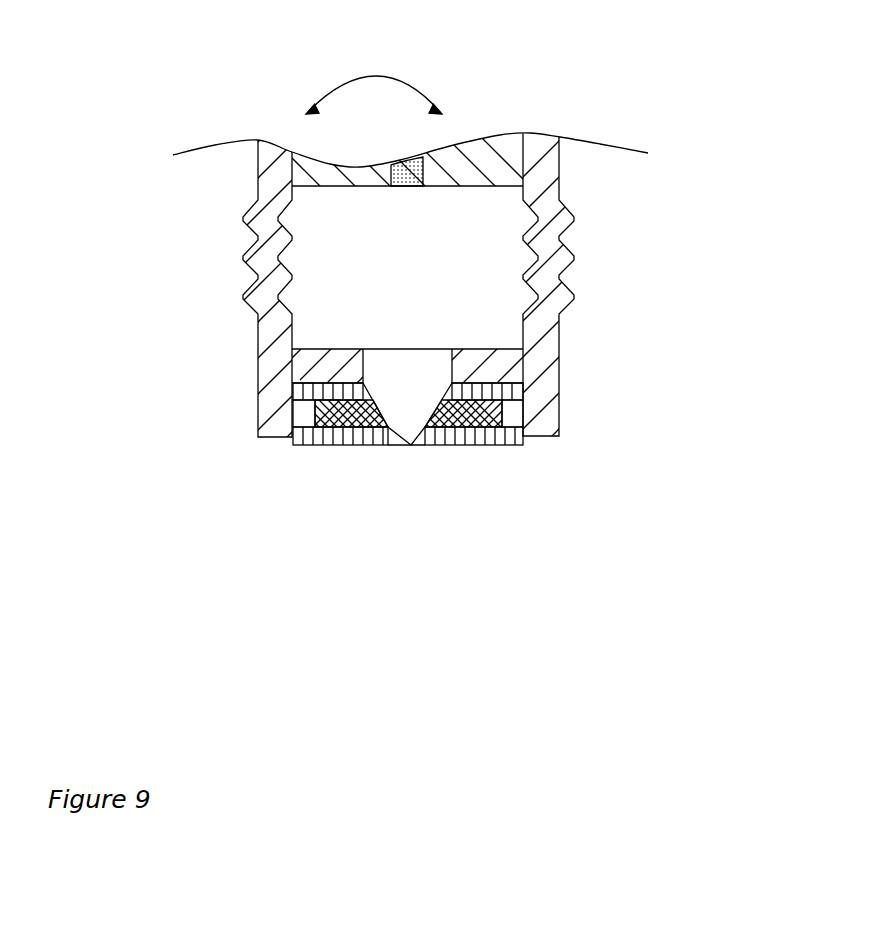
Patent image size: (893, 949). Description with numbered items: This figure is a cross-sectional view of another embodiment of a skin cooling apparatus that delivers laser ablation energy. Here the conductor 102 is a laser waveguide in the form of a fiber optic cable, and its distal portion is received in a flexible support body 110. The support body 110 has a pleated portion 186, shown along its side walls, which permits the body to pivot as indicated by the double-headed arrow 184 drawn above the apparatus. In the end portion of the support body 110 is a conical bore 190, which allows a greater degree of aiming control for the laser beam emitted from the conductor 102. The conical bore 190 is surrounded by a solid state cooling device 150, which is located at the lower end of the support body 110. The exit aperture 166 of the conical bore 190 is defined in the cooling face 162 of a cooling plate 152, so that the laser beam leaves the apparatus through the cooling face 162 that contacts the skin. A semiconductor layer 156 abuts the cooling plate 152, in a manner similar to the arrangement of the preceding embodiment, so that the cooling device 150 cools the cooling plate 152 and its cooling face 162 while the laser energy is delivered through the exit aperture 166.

The conductor 102 is at (498, 128).
The flexible support body 110 is at (272, 346).
The arrow 184 is at (378, 78).
The pleated portion 186 is at (575, 248).
The conical bore 190 is at (433, 400).
The solid state cooling device 150 is at (293, 447).
The cooling face 162 is at (320, 447).
The cooling plate 152 is at (353, 447).
The exit aperture 166 is at (414, 447).
The semiconductor layer 156 is at (525, 440).